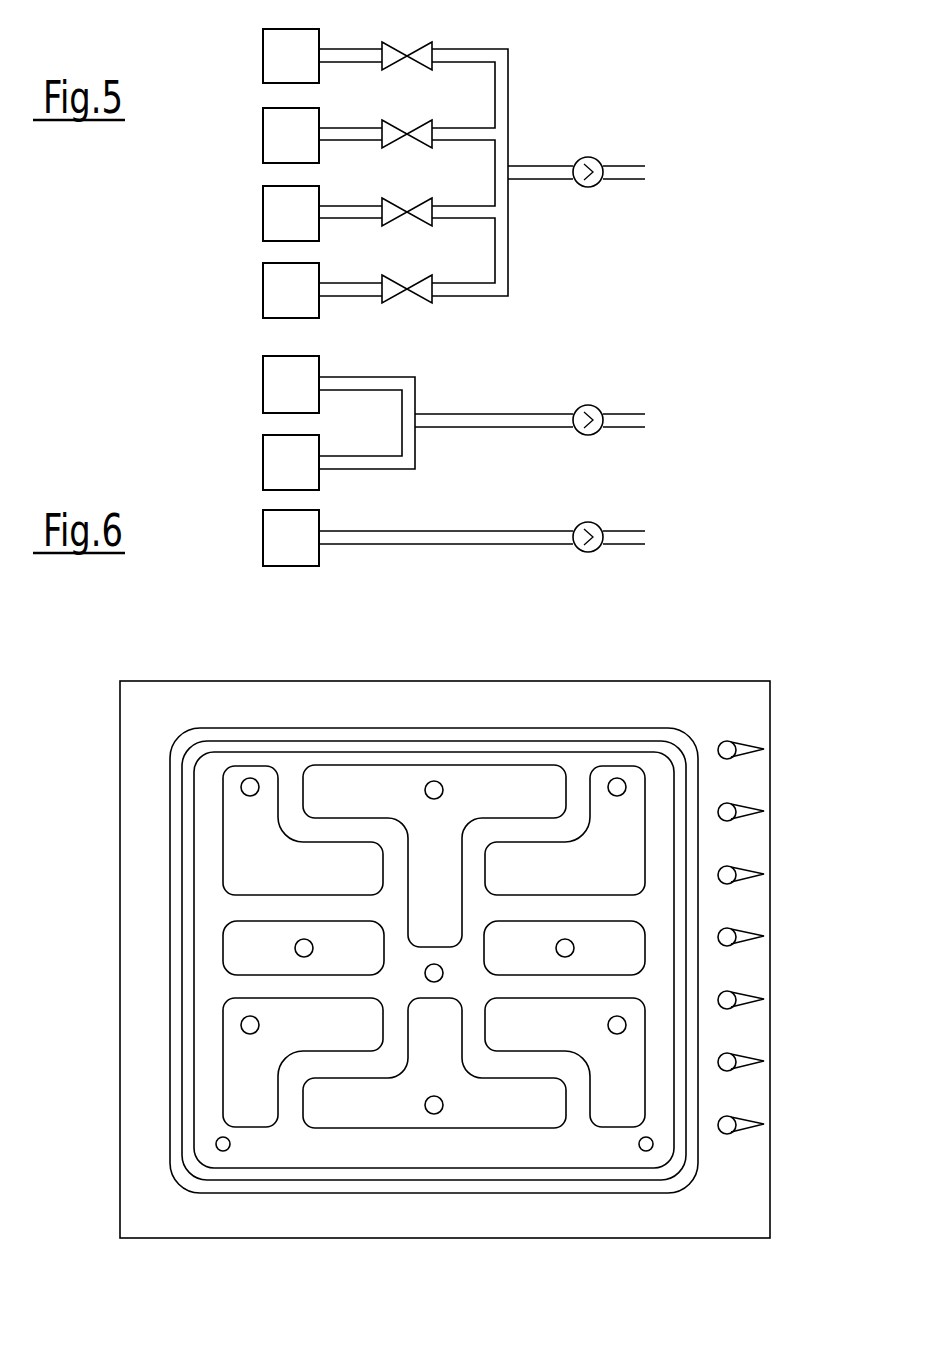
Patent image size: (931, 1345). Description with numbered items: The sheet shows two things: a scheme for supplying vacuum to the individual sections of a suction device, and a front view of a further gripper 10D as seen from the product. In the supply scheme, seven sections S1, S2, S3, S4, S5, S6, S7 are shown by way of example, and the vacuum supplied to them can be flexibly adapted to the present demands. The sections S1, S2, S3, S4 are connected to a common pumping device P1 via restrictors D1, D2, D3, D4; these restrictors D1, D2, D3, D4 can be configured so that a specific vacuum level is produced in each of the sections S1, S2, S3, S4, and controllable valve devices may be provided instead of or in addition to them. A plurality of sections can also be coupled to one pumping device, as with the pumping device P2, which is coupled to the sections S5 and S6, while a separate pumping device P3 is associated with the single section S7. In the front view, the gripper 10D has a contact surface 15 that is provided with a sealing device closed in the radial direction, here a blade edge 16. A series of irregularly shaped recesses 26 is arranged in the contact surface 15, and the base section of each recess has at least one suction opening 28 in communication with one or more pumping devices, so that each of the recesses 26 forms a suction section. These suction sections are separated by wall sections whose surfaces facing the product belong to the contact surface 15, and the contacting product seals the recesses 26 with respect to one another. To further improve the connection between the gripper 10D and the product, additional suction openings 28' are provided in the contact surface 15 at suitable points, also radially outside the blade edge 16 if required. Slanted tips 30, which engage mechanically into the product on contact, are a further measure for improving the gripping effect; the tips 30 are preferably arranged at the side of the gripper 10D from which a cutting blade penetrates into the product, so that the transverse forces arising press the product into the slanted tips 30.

In FIG. 5, the section S1 is at (291, 56).
In FIG. 5, the section S2 is at (291, 135).
In FIG. 5, the section S3 is at (291, 213).
In FIG. 5, the section S4 is at (291, 290).
In FIG. 5, the section S5 is at (291, 384).
In FIG. 5, the section S6 is at (291, 462).
In FIG. 5, the section S7 is at (291, 538).
In FIG. 5, the restrictor D1 is at (407, 42).
In FIG. 5, the restrictor D2 is at (407, 120).
In FIG. 5, the restrictor D3 is at (407, 198).
In FIG. 5, the restrictor D4 is at (407, 275).
In FIG. 5, the pumping device P1 is at (599, 152).
In FIG. 5, the pumping device P2 is at (599, 397).
In FIG. 5, the pumping device P3 is at (599, 519).
In FIG. 6, the gripper 10D is at (143, 674).
In FIG. 6, the contact surface 15 is at (285, 773).
In FIG. 6, the blade edge 16 is at (170, 942).
In FIG. 6, the recesses 26 is at (612, 763).
In FIG. 6, the suction openings 28 is at (324, 1042).
In FIG. 6, the suction openings 28' is at (353, 1220).
In FIG. 6, the slanted tips 30 is at (736, 808).